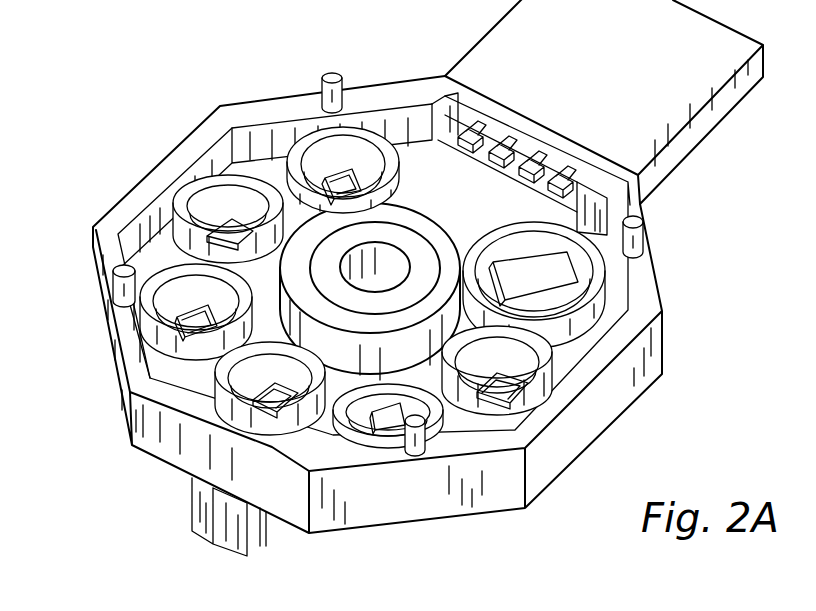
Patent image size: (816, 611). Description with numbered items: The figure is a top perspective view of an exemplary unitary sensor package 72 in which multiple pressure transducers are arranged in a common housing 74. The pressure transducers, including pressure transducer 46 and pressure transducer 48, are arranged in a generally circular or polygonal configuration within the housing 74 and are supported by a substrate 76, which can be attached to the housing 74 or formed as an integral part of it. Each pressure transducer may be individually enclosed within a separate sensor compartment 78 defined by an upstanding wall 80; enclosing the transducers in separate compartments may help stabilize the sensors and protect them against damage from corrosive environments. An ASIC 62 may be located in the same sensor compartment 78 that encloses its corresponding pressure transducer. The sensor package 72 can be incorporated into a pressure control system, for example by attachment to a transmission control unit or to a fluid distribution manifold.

The unitary sensor package 72 is at (187, 100).
The housing 74 is at (417, 496).
The ASIC 62 is at (537, 282).
The pressure transducer 46 is at (337, 162).
The pressure transducer 48 is at (227, 210).
The substrate 76 is at (233, 203).
The sensor compartment 78 is at (255, 175).
The upstanding wall 80 is at (365, 133).